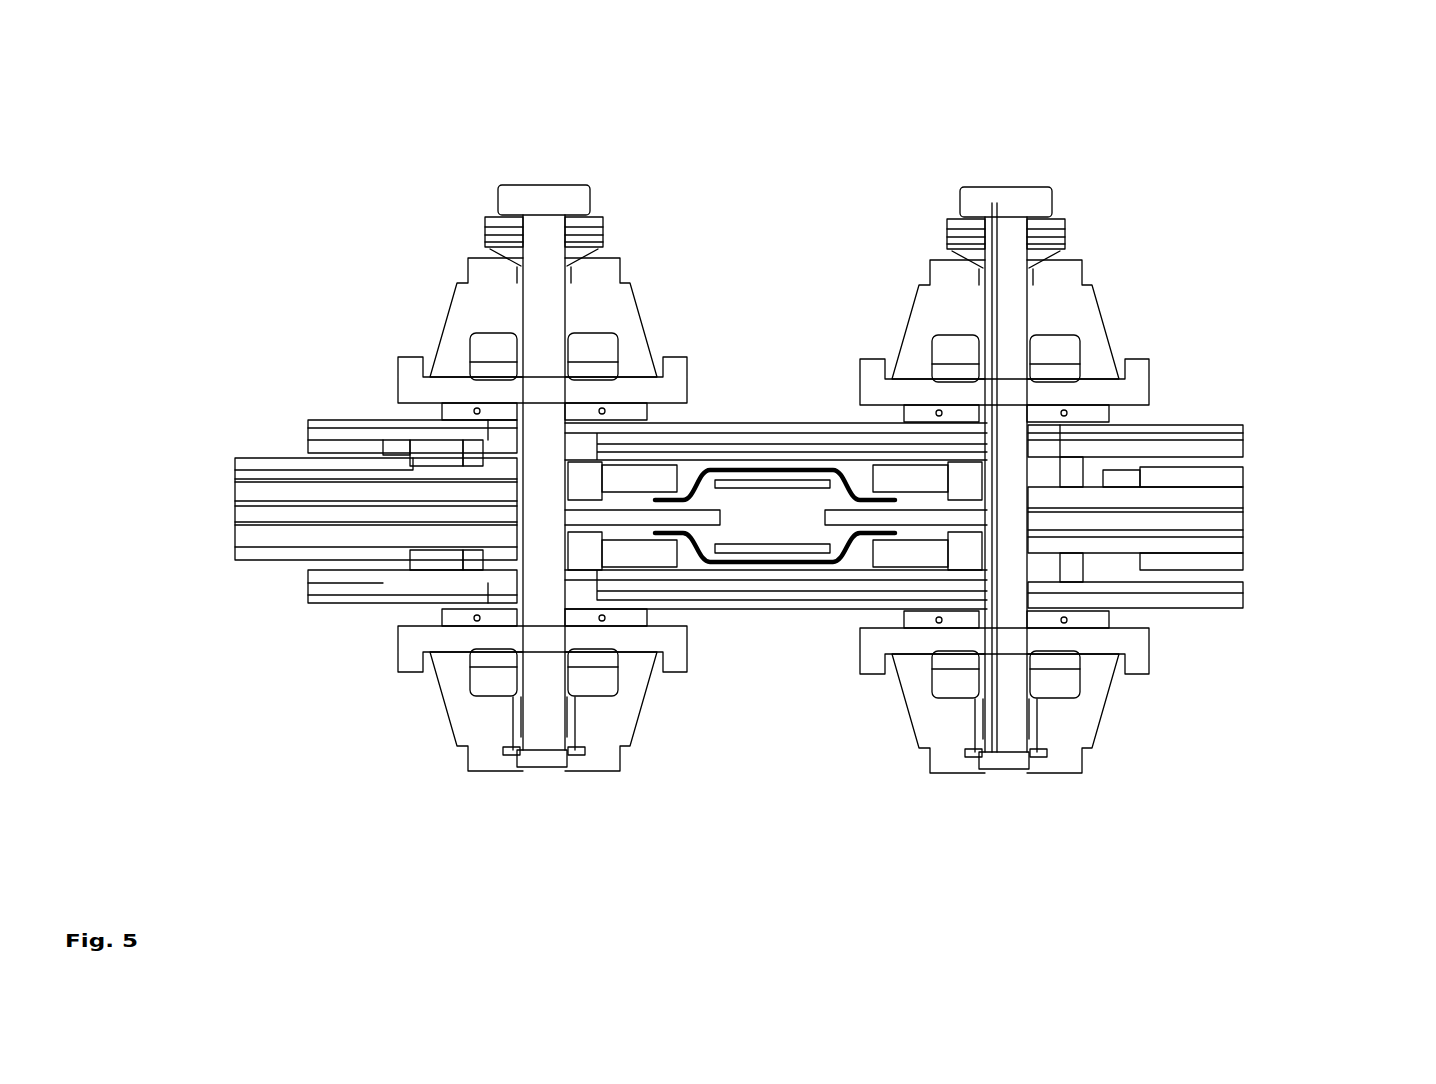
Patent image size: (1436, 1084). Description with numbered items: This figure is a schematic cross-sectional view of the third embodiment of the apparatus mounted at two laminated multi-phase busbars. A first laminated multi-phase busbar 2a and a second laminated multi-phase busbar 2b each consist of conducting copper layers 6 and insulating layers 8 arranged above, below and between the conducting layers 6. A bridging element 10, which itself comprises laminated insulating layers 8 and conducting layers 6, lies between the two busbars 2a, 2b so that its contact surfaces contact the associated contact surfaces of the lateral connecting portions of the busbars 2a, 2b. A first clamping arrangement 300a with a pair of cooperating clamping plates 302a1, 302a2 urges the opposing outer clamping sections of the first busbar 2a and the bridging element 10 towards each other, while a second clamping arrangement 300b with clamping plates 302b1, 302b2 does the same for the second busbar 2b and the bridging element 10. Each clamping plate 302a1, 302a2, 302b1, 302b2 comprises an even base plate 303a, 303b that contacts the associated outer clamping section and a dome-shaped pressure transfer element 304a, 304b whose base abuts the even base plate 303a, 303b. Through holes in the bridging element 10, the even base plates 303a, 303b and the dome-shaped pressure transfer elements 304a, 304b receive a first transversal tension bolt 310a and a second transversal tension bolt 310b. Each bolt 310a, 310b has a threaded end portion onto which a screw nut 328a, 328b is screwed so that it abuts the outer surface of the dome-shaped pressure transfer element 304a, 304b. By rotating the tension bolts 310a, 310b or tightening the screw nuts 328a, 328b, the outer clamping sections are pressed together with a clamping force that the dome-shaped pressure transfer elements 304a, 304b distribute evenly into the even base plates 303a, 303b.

The first clamping arrangement 300a is at (293, 153).
The second clamping arrangement 300b is at (1338, 138).
The clamping plate 302a1 is at (653, 282).
The clamping plate 302a2 is at (660, 723).
The clamping plate 302b1 is at (907, 270).
The clamping plate 302b2 is at (897, 730).
The even base plate 303a is at (410, 382).
The even base plate 303b is at (1155, 382).
The dome-shaped pressure transfer element 304a is at (452, 282).
The dome-shaped pressure transfer element 304b is at (1113, 297).
The first transversal tension bolt 310a is at (540, 558).
The second transversal tension bolt 310b is at (1010, 563).
The screw nut 328a is at (572, 757).
The screw nut 328b is at (978, 753).
The first laminated multi-phase busbar 2a is at (207, 438).
The second laminated multi-phase busbar 2b is at (1302, 447).
The insulating layers 8 is at (760, 424).
The conducting copper layers 6 is at (847, 475).
The bridging element 10 is at (782, 582).